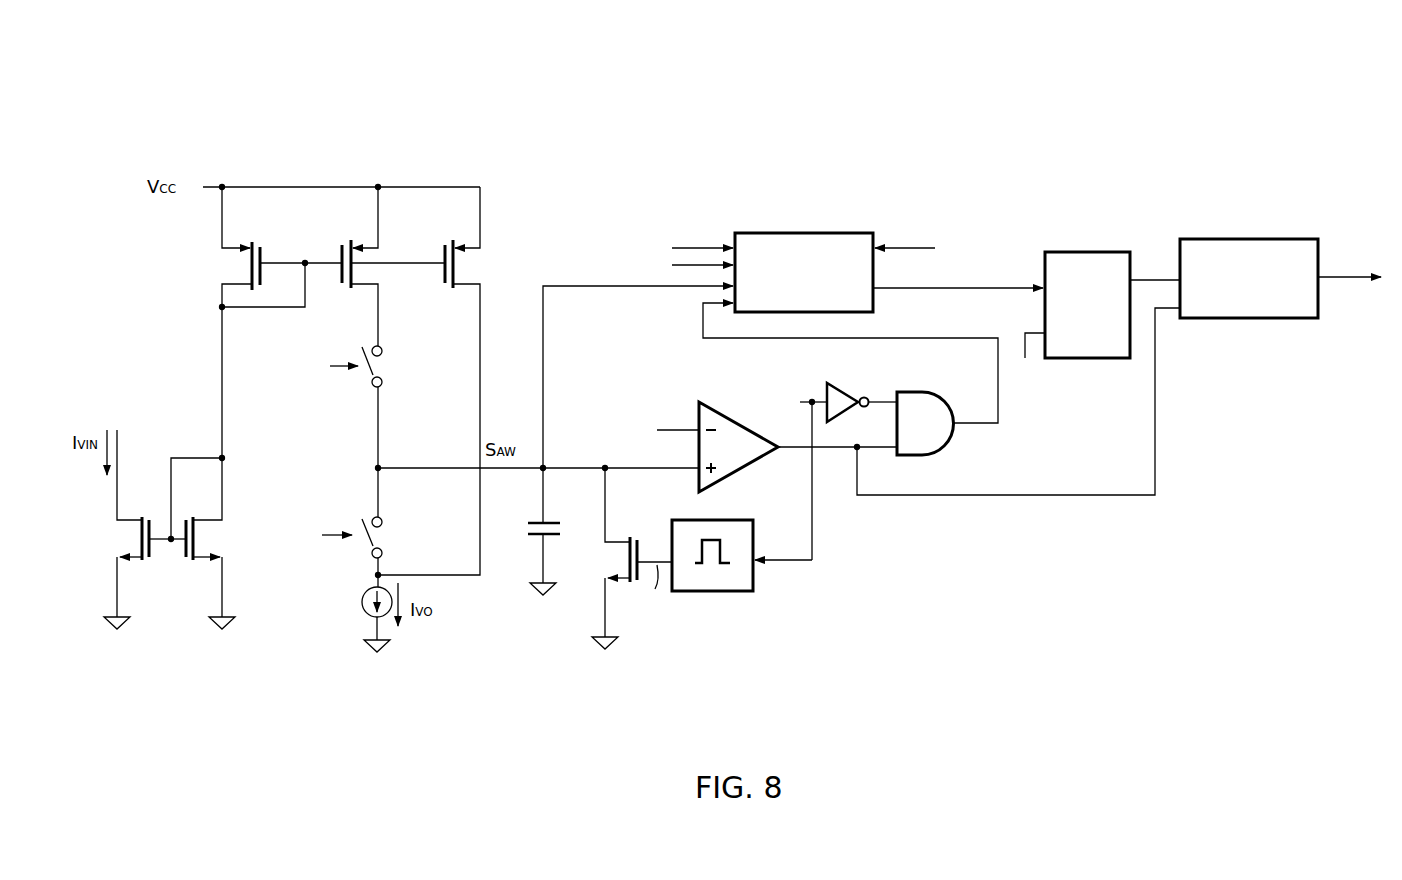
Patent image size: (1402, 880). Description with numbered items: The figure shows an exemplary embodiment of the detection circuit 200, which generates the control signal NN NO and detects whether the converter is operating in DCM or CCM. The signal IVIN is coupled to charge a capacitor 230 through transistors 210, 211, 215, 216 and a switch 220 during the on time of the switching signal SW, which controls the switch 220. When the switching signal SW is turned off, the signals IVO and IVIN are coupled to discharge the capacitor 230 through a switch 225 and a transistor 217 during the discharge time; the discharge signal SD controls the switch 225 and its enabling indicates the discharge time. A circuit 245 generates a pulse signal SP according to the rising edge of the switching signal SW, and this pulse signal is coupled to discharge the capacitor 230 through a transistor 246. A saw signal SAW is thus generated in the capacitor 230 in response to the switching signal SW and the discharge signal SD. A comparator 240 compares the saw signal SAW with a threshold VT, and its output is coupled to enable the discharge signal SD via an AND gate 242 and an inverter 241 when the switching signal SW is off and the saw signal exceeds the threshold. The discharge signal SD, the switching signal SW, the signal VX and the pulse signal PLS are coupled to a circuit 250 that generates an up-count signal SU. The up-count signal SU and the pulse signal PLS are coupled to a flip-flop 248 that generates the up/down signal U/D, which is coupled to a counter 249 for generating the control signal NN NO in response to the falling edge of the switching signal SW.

The detection circuit 200 is at (1088, 177).
The transistor 210 is at (137, 529).
The transistor 211 is at (202, 468).
The transistor 215 is at (238, 248).
The transistor 216 is at (341, 266).
The transistor 217 is at (435, 381).
The switch 220 is at (359, 407).
The switch 225 is at (357, 527).
The capacitor 230 is at (531, 531).
The comparator 240 is at (762, 447).
The inverter 241 is at (827, 459).
The AND gate 242 is at (912, 392).
The circuit 245 is at (742, 569).
The transistor 246 is at (621, 558).
The flip-flop 248 is at (1097, 250).
The counter 249 is at (1128, 355).
The circuit 250 is at (840, 272).